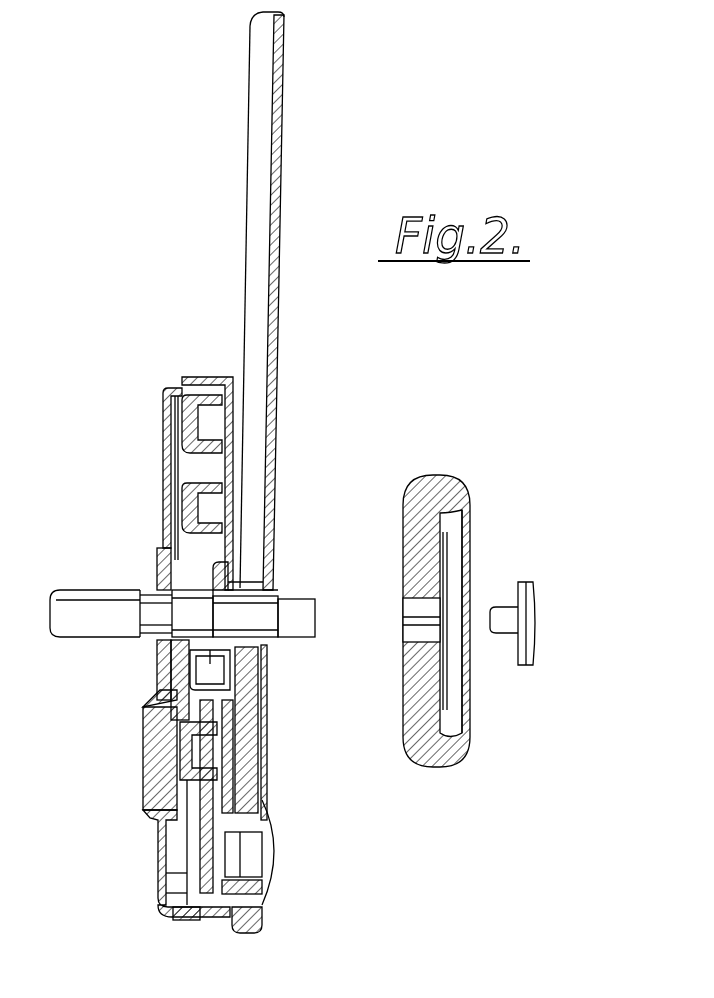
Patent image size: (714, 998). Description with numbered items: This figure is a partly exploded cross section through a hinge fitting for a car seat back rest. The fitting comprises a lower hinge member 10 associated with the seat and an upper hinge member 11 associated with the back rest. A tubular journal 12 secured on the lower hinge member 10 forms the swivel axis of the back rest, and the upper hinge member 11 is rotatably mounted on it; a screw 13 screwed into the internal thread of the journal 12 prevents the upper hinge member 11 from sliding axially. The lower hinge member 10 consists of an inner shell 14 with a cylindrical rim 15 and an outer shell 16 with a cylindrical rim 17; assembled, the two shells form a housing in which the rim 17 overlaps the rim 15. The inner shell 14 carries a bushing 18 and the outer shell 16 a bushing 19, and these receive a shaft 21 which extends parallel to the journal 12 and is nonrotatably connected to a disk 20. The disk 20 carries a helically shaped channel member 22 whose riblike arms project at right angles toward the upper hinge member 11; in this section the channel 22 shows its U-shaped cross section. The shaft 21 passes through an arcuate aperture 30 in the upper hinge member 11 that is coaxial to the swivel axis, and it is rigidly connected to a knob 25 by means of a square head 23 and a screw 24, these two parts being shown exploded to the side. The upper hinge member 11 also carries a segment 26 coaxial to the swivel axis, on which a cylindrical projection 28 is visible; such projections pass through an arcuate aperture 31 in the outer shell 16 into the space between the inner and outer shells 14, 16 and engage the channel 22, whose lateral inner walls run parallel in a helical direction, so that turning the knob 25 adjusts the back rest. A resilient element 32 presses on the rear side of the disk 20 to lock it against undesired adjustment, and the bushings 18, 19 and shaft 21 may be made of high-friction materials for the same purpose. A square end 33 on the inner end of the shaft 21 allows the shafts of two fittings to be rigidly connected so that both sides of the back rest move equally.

The lower hinge member 10 is at (195, 378).
The upper hinge member 11 is at (280, 277).
The journal 12 is at (240, 893).
The screw 13 is at (270, 852).
The inner shell 14 is at (158, 873).
The cylindrical rim 15 is at (158, 893).
The outer shell 16 is at (224, 778).
The cylindrical rim 17 is at (190, 915).
The bushing 18 is at (157, 576).
The bushing 19 is at (226, 580).
The disk 20 is at (163, 823).
The shaft 21 is at (152, 628).
The helically shaped channel member 22 is at (185, 490).
The square head 23 is at (305, 627).
The screw 24 is at (523, 642).
The knob 25 is at (462, 538).
The segment 26 is at (248, 696).
The cylindrical projection 28 is at (204, 673).
The arcuate aperture 30 is at (268, 660).
The arcuate aperture 31 is at (150, 704).
The resilient element 32 is at (155, 733).
The square end 33 is at (70, 600).